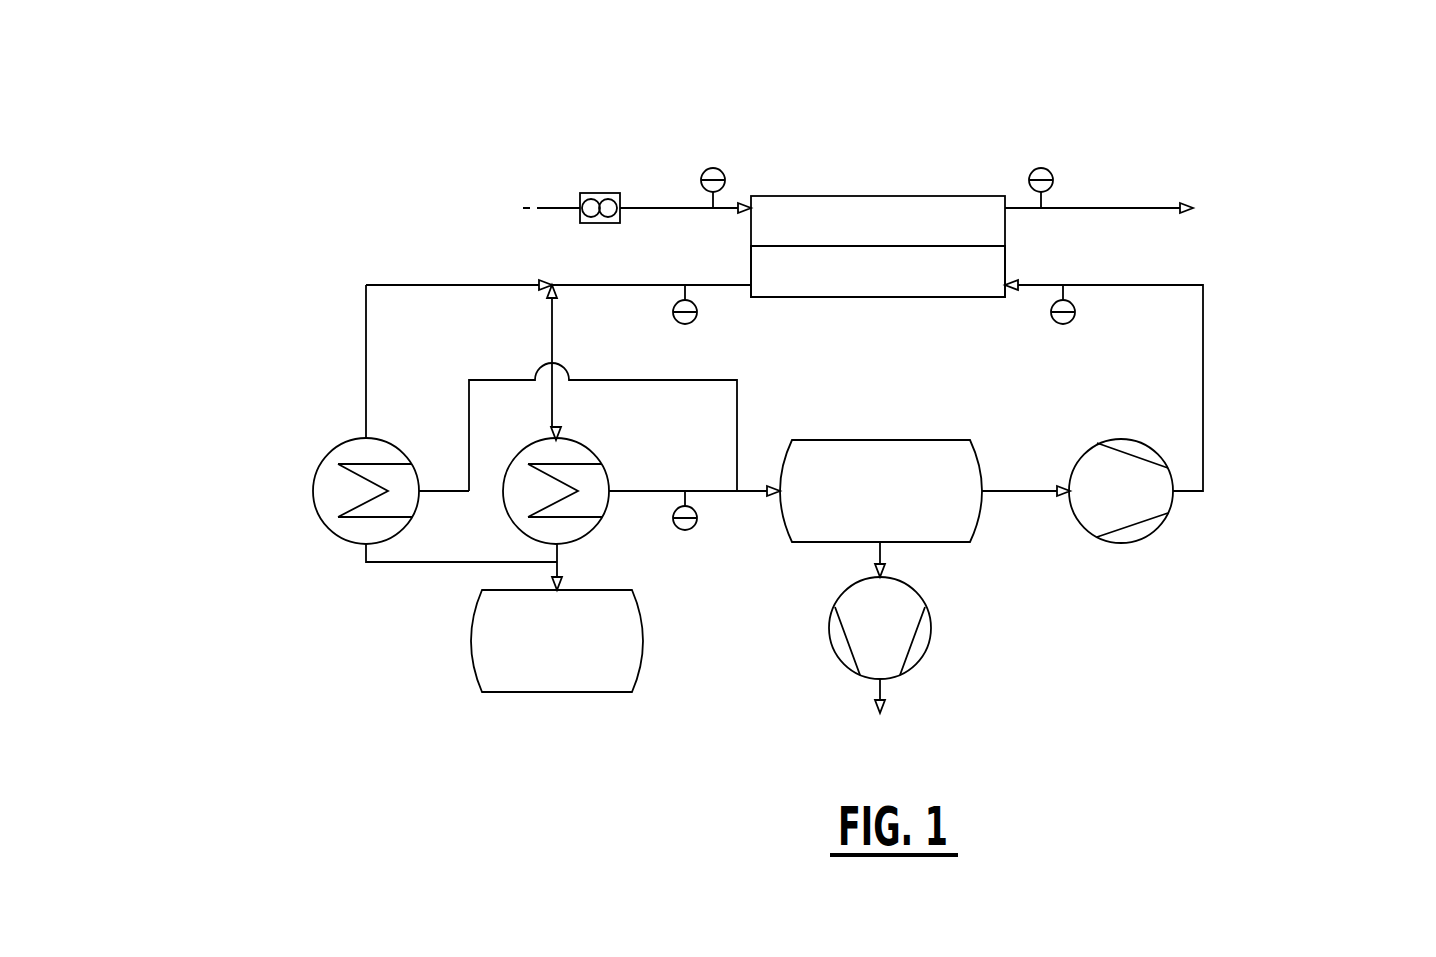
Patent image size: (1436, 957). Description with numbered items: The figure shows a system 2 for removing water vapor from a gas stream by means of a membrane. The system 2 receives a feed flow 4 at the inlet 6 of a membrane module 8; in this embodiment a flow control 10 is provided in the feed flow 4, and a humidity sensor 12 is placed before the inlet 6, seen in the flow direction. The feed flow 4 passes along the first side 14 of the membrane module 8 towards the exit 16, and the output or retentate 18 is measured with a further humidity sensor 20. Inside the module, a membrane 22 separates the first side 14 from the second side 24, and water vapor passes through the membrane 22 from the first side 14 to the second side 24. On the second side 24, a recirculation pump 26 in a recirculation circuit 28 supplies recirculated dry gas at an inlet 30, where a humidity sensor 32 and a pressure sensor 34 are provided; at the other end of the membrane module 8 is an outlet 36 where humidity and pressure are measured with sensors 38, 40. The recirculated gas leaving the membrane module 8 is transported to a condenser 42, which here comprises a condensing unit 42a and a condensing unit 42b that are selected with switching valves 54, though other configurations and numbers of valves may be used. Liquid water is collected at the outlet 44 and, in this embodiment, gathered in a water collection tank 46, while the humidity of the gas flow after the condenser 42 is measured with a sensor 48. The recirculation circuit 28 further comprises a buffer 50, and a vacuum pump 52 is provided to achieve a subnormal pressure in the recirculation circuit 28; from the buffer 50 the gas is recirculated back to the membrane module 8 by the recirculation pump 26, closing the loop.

The system 2 is at (1325, 148).
The feed flow 4 is at (537, 207).
The inlet 6 is at (748, 168).
The membrane module 8 is at (845, 209).
The flow control 10 is at (597, 192).
The humidity sensor 12 is at (712, 168).
The first side 14 is at (928, 210).
The exit 16 is at (1018, 180).
The retentate 18 is at (1126, 207).
The humidity sensor 20 is at (1041, 168).
The membrane 22 is at (903, 247).
The second side 24 is at (793, 269).
The recirculation pump 26 is at (1145, 500).
The recirculation circuit 28 is at (1245, 340).
The inlet 30 is at (1025, 305).
The humidity sensor 32 is at (1115, 347).
The pressure sensor 34 is at (1068, 318).
The outlet 36 is at (745, 282).
The sensor 38 is at (776, 316).
The sensor 40 is at (692, 322).
The condenser 42 is at (440, 479).
The condensing unit 42a is at (575, 528).
The condensing unit 42b is at (348, 530).
The outlet 44 is at (563, 552).
The water collection tank 46 is at (477, 653).
The sensor 48 is at (692, 522).
The buffer 50 is at (960, 514).
The vacuum pump 52 is at (885, 633).
The switching valves 54 is at (537, 300).